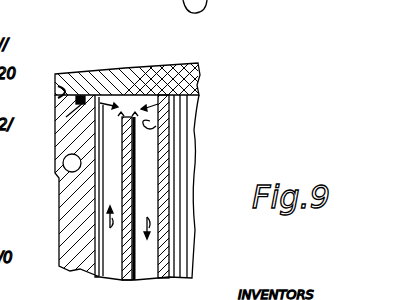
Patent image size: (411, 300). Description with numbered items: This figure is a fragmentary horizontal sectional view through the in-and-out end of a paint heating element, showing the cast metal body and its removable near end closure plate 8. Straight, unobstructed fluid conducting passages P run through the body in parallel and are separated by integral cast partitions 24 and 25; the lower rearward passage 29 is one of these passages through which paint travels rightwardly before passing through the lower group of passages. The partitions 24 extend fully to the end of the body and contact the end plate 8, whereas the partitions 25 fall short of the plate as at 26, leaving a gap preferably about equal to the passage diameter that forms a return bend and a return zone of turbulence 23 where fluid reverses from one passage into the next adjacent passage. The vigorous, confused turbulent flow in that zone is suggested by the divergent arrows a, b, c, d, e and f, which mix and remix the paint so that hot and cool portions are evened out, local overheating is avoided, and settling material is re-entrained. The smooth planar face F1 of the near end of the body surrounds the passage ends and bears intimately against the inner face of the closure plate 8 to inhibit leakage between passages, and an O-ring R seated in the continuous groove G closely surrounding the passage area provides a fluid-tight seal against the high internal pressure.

The near end closure plate 8 is at (180, 63).
The return zone of turbulence 23 is at (128, 113).
The partition 24 is at (165, 204).
The partition 25 is at (125, 265).
The point at short end of partition 26 is at (198, 69).
The lower rearward passage 29 is at (102, 195).
The fluid conducting passage P is at (182, 150).
The O-ring R is at (80, 97).
The continuous groove G is at (77, 101).
The face of near end of body F1 is at (58, 88).
The arrow a is at (108, 232).
The arrow b is at (104, 100).
The arrow c is at (118, 108).
The arrow d is at (150, 121).
The arrow e is at (140, 111).
The arrow f is at (146, 246).